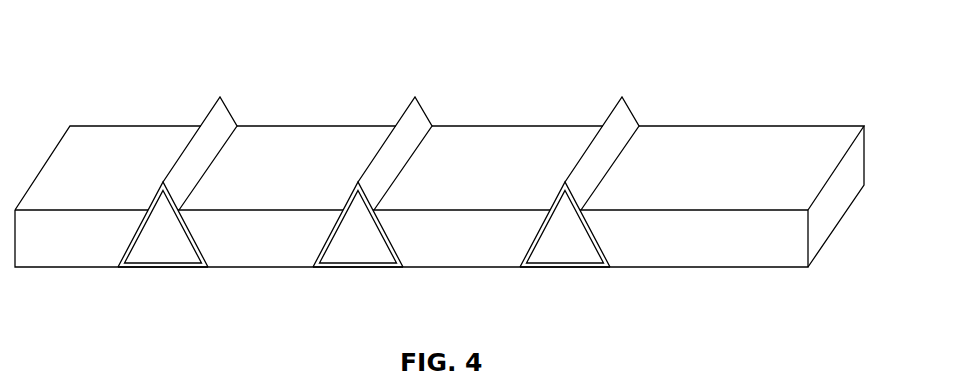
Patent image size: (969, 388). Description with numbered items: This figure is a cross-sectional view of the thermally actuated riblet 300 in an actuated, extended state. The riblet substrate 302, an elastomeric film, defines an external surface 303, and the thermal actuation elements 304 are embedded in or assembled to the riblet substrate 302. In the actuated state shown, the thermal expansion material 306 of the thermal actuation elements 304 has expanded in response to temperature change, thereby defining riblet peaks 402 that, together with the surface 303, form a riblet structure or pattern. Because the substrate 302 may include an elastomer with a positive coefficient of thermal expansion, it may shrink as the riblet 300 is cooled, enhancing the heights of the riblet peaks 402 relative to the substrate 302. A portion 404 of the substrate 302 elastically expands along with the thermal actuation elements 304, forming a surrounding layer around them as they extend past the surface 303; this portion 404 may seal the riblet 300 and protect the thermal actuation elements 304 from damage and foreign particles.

The thermally actuated riblet 300 is at (113, 61).
The riblet substrate 302 is at (303, 125).
The external surface 303 is at (747, 160).
The thermal actuation elements 304 is at (163, 267).
The thermal expansion material 306 is at (133, 245).
The riblet peaks 402 is at (225, 118).
The portion of the substrate 404 is at (152, 202).